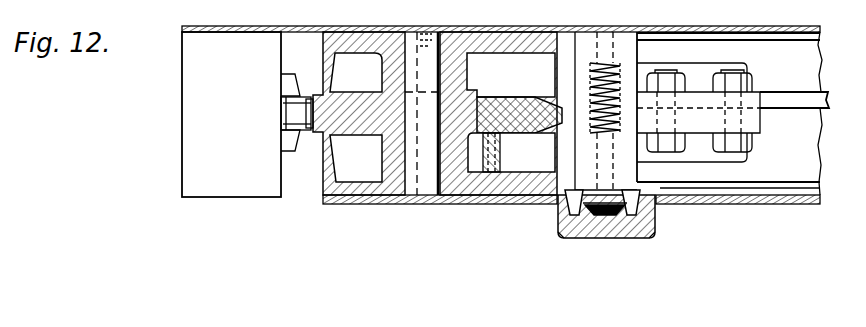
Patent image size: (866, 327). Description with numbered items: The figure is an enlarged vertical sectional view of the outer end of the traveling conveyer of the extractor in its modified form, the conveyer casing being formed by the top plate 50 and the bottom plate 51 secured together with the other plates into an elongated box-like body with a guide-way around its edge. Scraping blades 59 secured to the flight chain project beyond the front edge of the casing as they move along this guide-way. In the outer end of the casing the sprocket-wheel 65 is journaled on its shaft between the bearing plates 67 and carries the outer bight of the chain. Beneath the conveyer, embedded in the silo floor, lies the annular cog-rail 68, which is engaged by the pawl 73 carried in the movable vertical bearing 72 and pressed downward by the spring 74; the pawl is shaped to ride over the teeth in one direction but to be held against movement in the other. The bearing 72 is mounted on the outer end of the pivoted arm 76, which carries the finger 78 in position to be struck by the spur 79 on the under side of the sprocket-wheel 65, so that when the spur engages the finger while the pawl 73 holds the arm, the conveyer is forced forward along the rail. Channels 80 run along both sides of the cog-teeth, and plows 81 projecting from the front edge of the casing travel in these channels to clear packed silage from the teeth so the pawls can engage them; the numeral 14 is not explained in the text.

The carriage assembly 14 is at (607, 19).
The top plate 50 is at (792, 26).
The bottom plate 51 is at (510, 205).
The scraping blades 59 is at (196, 128).
The sprocket-wheel 65 is at (281, 116).
The bearing plates 67 is at (356, 38).
The annular cog-rail 68 is at (658, 220).
The vertical bearing 72 is at (640, 41).
The pawl 73 is at (606, 216).
The spring 74 is at (590, 80).
The arm 76 is at (791, 102).
The finger 78 is at (514, 112).
The spur 79 is at (486, 166).
The channels 80 is at (559, 237).
The plows 81 is at (632, 191).